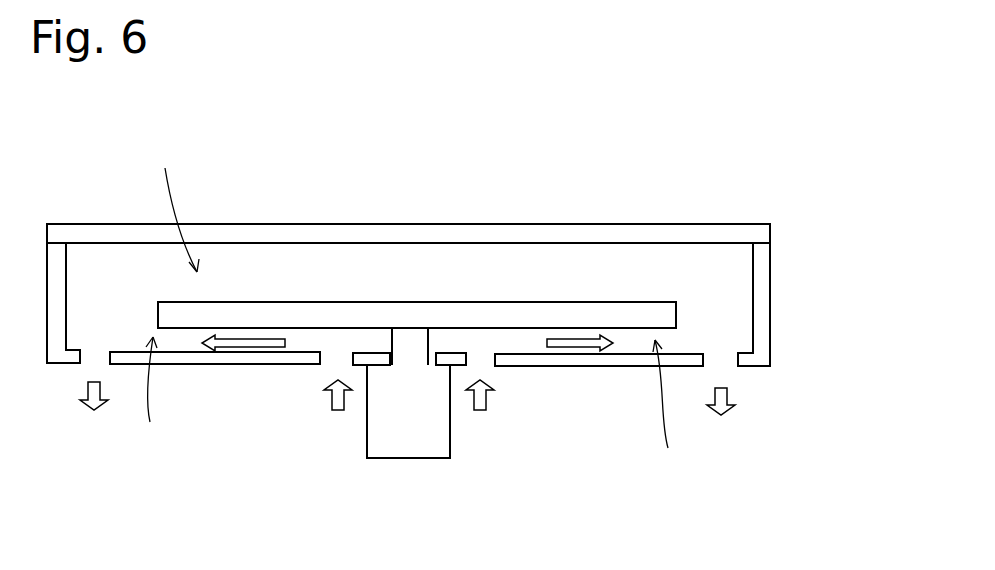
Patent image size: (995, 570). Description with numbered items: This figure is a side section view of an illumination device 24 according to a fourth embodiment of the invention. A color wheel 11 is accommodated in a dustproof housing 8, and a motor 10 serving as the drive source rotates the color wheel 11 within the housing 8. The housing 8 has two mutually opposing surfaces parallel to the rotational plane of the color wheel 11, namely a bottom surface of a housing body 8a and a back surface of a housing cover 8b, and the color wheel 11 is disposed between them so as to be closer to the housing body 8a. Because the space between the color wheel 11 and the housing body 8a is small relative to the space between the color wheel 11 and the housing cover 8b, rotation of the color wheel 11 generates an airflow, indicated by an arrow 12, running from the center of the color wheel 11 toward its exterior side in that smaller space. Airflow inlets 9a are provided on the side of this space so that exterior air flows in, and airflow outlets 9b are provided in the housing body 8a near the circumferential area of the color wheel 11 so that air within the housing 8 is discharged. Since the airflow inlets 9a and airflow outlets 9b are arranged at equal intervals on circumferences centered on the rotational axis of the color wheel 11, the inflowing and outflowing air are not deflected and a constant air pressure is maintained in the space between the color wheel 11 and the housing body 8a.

The illumination device 24 is at (747, 93).
The housing 8 is at (827, 155).
The housing body 8a is at (766, 285).
The housing cover 8b is at (752, 233).
The color wheel 11 is at (300, 306).
The motor 10 is at (425, 443).
The airflow inlets 9a is at (322, 360).
The airflow outlets 9b is at (82, 365).
The arrow 12 is at (242, 350).